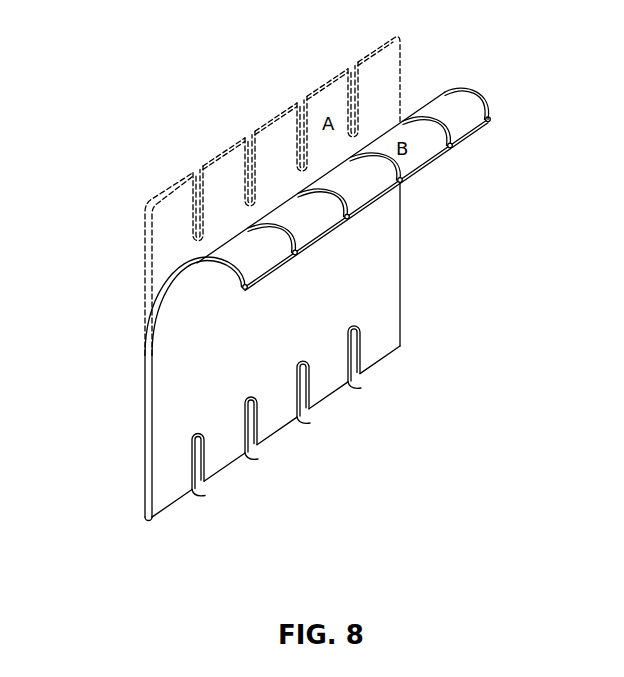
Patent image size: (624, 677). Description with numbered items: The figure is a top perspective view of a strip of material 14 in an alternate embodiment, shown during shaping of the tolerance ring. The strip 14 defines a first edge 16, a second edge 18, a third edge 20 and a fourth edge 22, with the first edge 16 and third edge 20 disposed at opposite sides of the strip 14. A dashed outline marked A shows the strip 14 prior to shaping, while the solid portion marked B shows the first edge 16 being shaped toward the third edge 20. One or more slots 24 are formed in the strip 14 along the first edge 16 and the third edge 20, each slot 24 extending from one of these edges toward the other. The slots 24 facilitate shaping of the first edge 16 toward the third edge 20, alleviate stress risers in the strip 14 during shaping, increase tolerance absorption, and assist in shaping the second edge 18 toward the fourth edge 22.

The strip of material 14 is at (400, 65).
The first edge 16 is at (401, 180).
The second edge 18 is at (401, 302).
The third edge 20 is at (385, 362).
The fourth edge 22 is at (146, 472).
The slot 24 is at (196, 490).